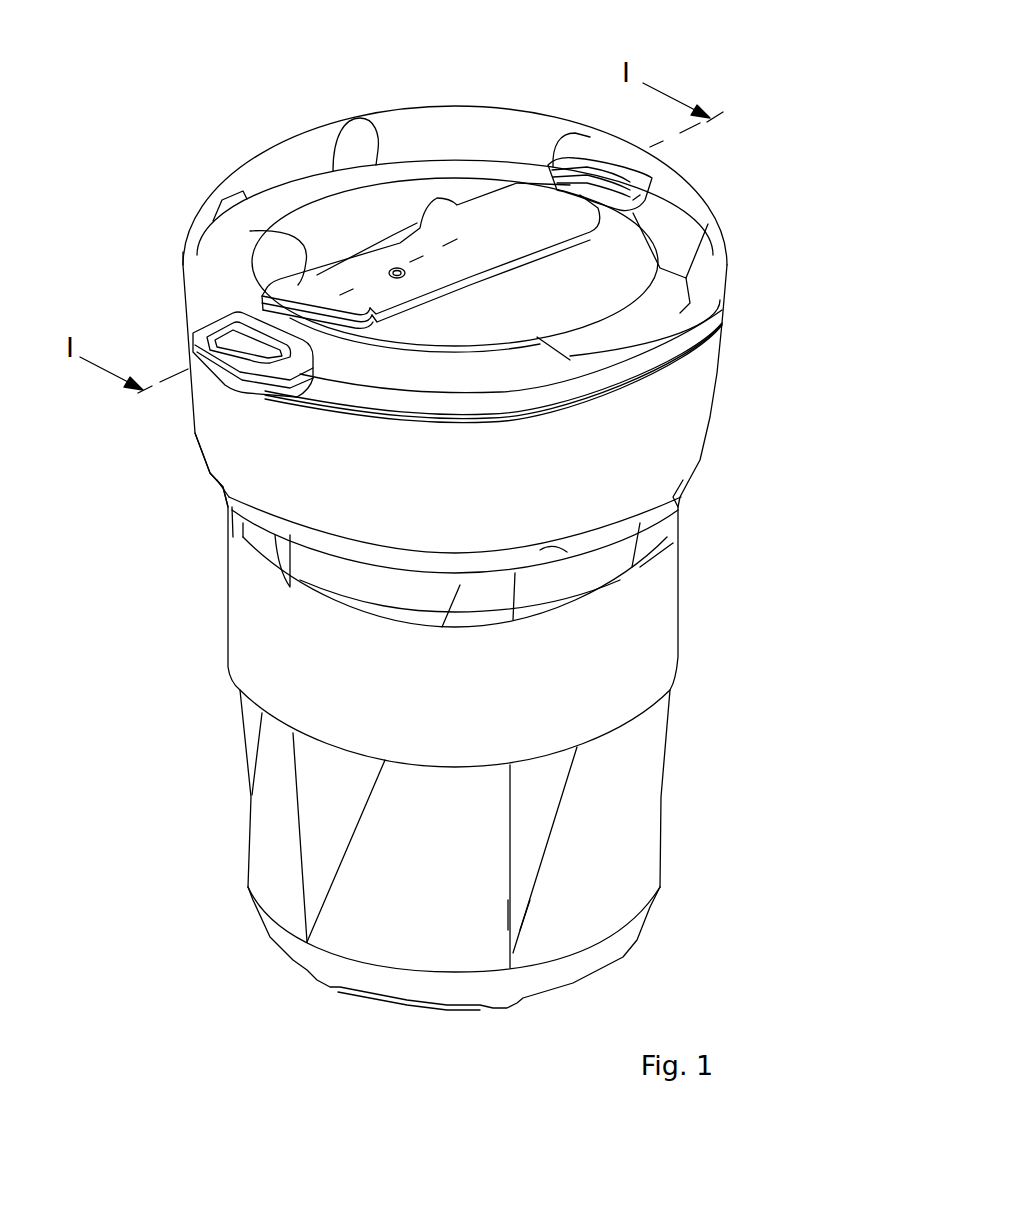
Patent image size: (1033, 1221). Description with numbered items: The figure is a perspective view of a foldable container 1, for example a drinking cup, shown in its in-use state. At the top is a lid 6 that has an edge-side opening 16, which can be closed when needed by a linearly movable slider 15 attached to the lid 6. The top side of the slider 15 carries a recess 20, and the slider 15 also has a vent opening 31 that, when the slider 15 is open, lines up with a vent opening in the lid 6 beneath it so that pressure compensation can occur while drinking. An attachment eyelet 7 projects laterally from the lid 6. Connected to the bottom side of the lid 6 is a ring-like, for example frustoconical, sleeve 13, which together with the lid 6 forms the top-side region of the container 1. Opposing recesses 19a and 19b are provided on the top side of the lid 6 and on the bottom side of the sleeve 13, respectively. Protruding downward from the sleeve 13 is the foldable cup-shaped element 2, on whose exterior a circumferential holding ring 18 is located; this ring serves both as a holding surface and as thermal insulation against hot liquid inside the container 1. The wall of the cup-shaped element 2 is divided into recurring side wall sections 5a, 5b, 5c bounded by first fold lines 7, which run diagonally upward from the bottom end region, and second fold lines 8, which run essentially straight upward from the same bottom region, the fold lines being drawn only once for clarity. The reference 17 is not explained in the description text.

The foldable container 1 is at (318, 31).
The cup-shaped element 2 is at (676, 753).
The side wall section 5a is at (365, 837).
The side wall section 5b is at (530, 866).
The side wall section 5c is at (563, 850).
The lid 6 is at (715, 260).
The first fold line 7 is at (523, 927).
The second fold line 8 is at (508, 908).
The sleeve 13 is at (223, 448).
The slider 15 is at (370, 260).
The edge-side opening 16 is at (583, 187).
The tab 17 is at (245, 373).
The holding ring 18 is at (653, 638).
The recess 19a is at (650, 308).
The recess 19b is at (563, 550).
The recess 20 is at (250, 231).
The vent opening 31 is at (397, 268).